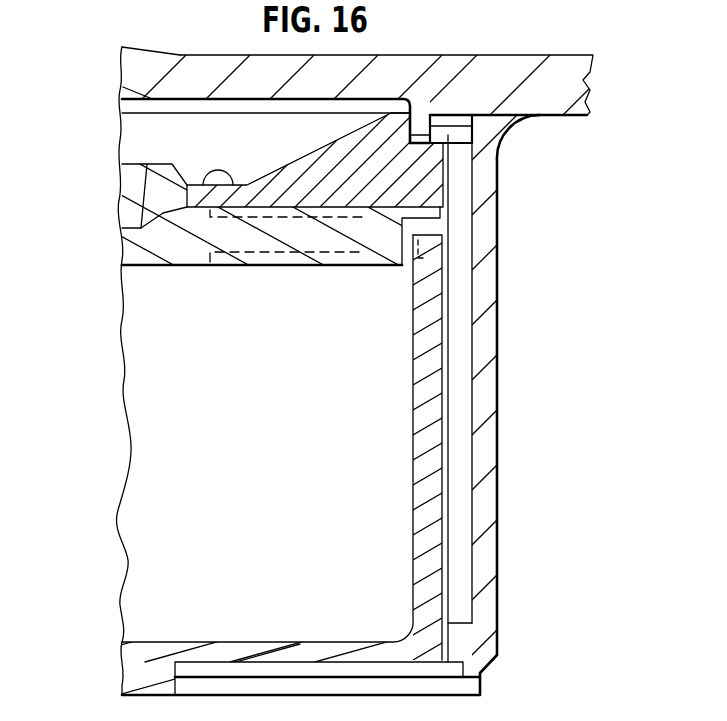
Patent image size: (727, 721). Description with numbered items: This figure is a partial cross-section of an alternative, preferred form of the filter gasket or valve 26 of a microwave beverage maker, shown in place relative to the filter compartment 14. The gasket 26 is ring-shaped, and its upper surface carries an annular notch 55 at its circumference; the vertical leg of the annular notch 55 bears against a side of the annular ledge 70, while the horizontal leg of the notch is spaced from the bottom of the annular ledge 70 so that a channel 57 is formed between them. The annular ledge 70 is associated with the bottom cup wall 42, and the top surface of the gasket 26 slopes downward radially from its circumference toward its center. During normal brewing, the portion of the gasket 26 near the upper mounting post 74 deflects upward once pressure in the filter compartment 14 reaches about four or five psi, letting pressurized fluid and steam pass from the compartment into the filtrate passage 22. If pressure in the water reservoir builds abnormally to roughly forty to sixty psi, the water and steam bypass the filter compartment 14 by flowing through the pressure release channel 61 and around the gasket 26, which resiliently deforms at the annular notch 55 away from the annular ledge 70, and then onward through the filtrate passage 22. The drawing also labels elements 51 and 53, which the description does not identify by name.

The bottom cup wall 42 is at (408, 57).
The annular ledge 70 is at (416, 138).
The filtrate passage 22 is at (165, 108).
The seal body 51 is at (282, 168).
The upper mounting post 74 is at (157, 184).
The holder band 53 is at (168, 207).
The annular notch 55 is at (450, 130).
The channel 57 is at (418, 143).
The pressure release channel 61 is at (463, 277).
The filter gasket or valve 26 is at (383, 250).
The filter compartment 14 is at (380, 457).